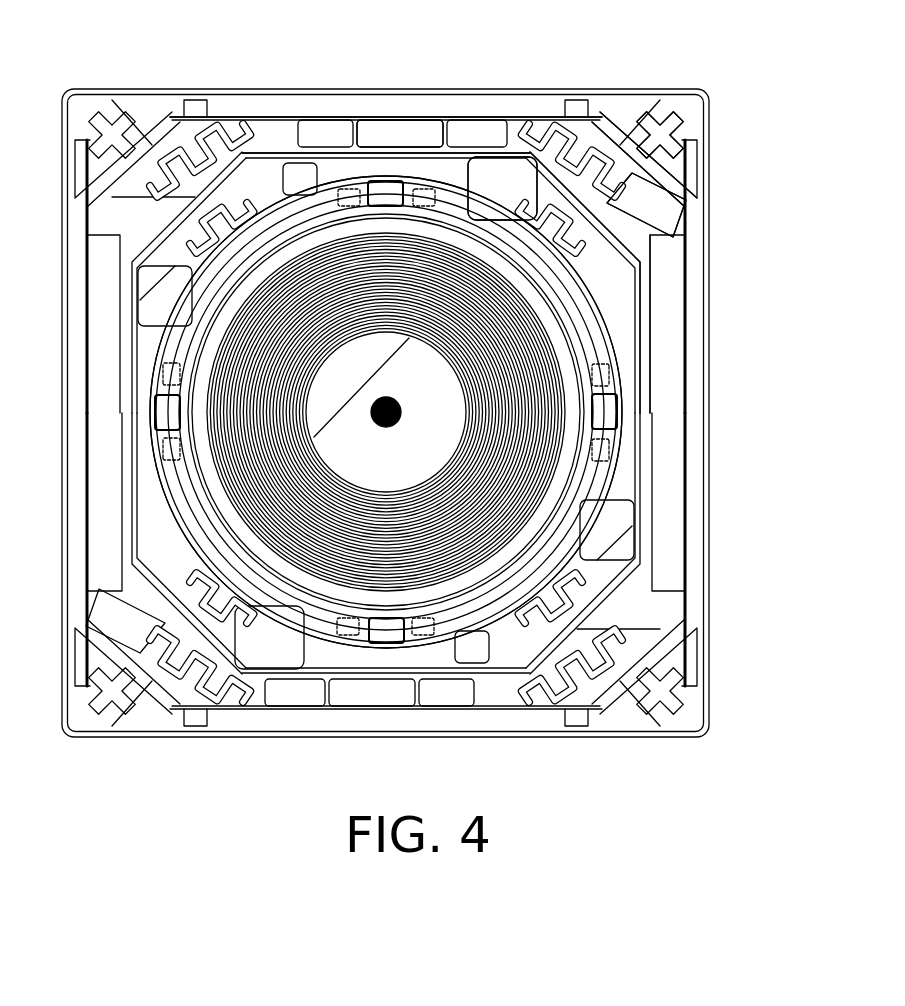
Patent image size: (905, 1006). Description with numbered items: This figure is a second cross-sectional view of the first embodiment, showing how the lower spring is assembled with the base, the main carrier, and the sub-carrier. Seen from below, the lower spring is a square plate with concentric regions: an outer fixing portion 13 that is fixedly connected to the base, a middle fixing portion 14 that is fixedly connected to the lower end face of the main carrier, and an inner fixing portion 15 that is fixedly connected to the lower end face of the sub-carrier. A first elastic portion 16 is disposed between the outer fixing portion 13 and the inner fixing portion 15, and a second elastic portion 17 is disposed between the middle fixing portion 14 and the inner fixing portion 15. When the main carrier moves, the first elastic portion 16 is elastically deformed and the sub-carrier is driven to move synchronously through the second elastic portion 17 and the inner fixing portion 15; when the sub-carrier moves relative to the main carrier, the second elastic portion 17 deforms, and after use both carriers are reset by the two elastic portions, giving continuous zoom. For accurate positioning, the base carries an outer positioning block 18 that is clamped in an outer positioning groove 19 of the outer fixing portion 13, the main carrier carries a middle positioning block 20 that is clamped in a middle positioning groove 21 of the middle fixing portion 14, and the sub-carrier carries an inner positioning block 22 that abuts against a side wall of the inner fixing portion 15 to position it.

The outer fixing portion 13 is at (670, 172).
The middle fixing portion 14 is at (637, 233).
The inner fixing portion 15 is at (622, 350).
The first elastic portion 16 is at (560, 123).
The second elastic portion 17 is at (620, 280).
The outer positioning block 18 is at (655, 132).
The outer positioning groove 19 is at (667, 150).
The middle positioning block 20 is at (388, 130).
The middle positioning groove 21 is at (370, 147).
The inner positioning block 22 is at (505, 177).